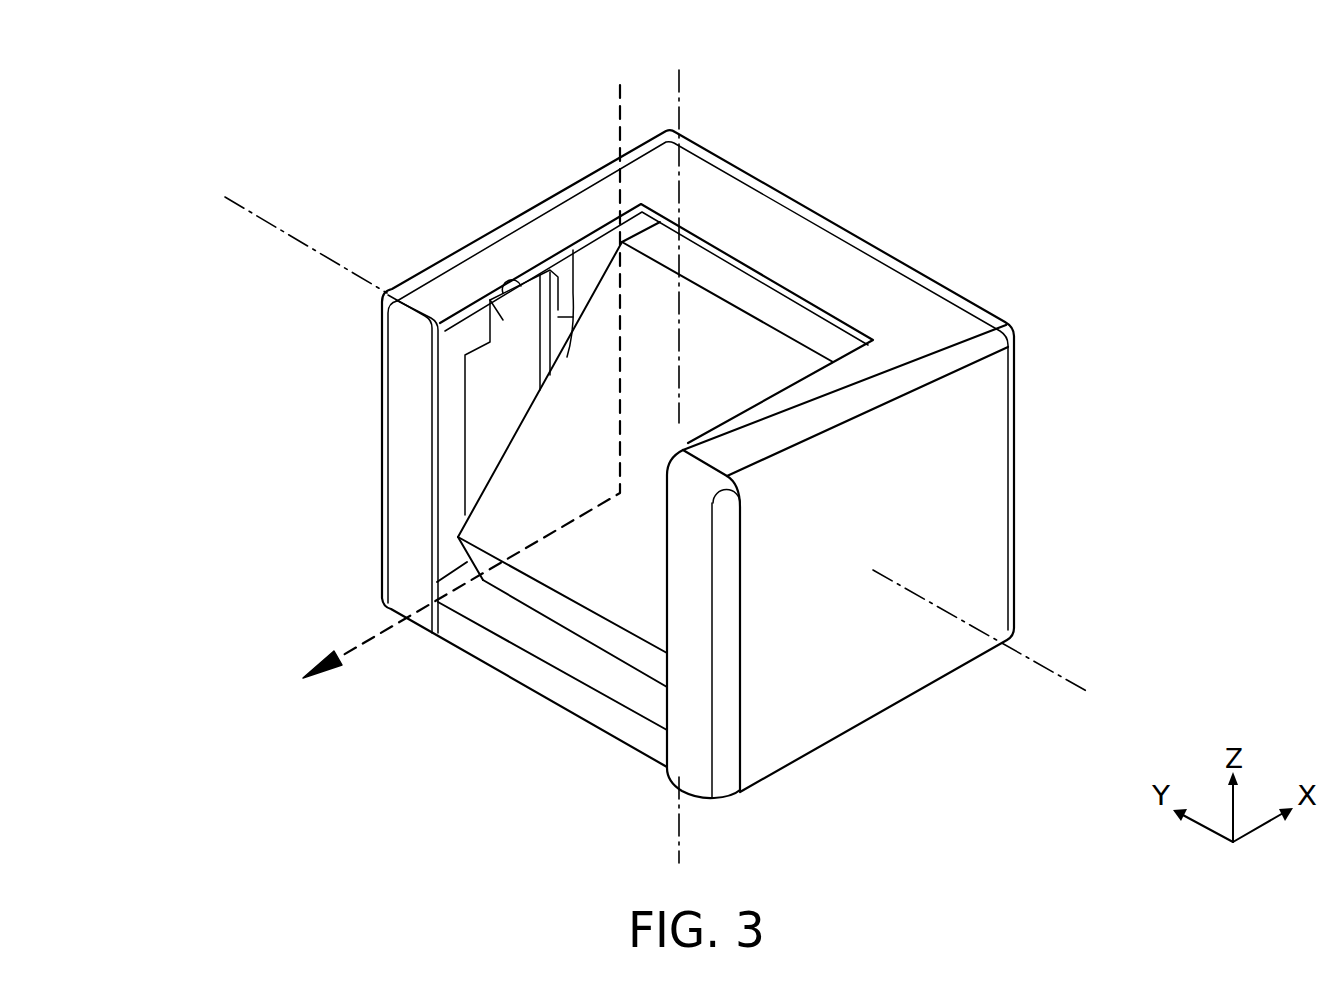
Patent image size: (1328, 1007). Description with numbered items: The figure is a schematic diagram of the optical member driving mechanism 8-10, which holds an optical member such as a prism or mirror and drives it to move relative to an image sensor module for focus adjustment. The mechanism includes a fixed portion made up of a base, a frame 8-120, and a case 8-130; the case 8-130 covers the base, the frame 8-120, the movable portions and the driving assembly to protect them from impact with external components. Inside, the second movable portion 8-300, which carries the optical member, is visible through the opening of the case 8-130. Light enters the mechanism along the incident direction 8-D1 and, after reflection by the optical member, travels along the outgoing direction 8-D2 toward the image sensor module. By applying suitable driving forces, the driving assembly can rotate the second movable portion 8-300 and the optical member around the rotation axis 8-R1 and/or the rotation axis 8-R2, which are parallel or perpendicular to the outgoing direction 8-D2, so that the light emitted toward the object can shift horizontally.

The optical member driving mechanism 8-10 is at (140, 56).
The frame 8-120 is at (520, 663).
The case 8-130 is at (988, 453).
The second movable portion 8-300 is at (760, 360).
The incident direction 8-D1 is at (618, 113).
The outgoing direction 8-D2 is at (358, 647).
The rotation axis 8-R1 is at (626, 431).
The rotation axis 8-R2 is at (678, 452).